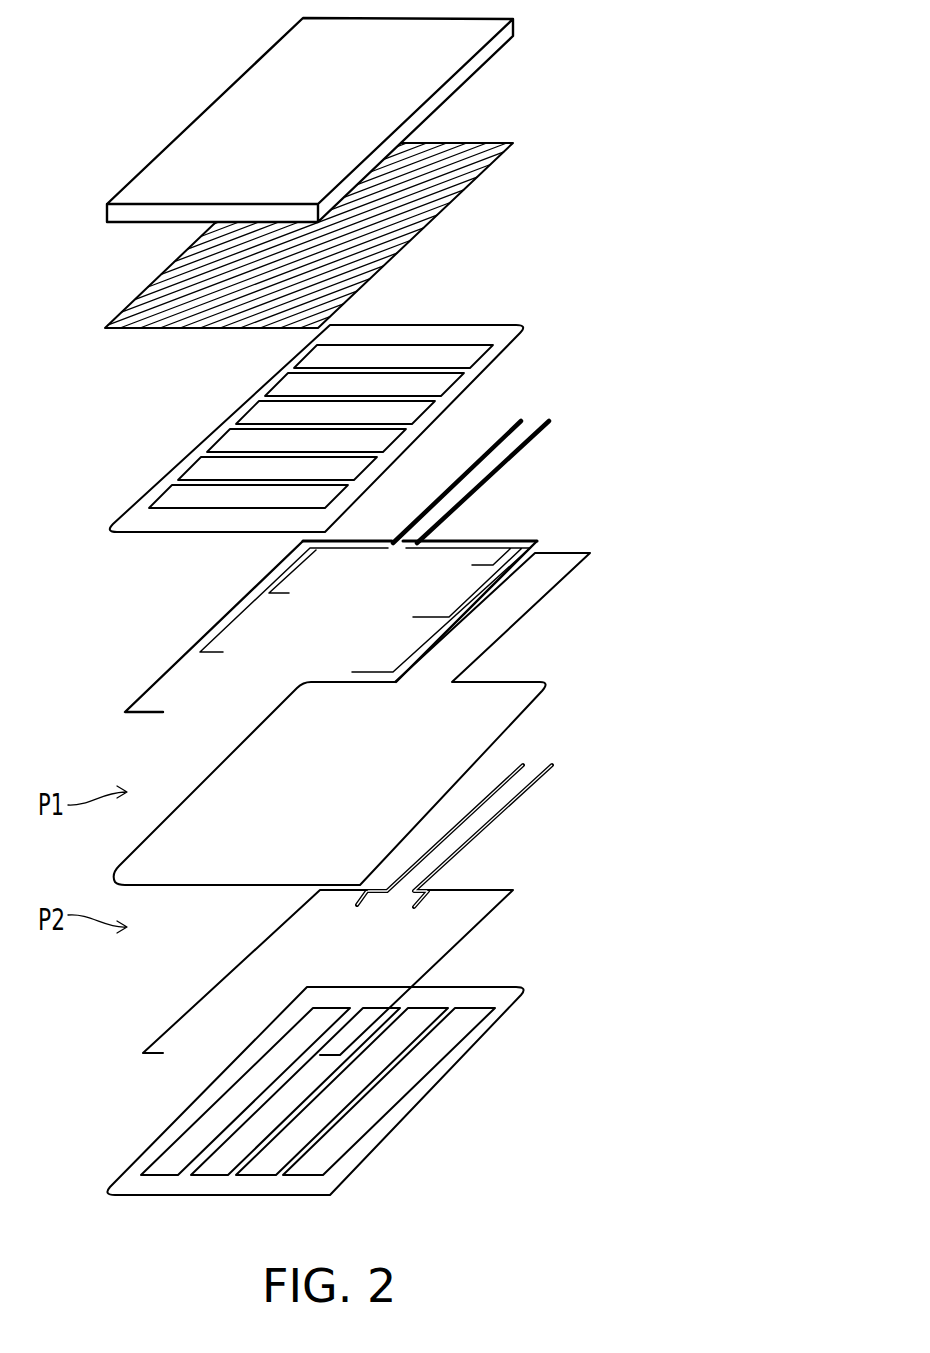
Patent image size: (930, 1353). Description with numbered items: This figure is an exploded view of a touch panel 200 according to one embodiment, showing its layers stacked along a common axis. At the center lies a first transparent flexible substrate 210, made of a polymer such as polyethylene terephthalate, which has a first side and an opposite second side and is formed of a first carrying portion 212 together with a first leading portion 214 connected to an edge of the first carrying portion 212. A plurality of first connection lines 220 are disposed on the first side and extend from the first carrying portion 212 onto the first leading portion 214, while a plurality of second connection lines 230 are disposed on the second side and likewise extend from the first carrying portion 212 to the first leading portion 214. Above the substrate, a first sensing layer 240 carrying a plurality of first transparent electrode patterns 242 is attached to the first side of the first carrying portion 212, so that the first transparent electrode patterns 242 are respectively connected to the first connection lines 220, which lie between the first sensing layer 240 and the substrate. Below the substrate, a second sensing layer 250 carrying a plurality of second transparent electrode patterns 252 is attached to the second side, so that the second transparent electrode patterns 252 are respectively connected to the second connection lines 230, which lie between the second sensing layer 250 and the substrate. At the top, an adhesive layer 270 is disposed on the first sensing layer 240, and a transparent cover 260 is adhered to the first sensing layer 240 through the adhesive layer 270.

The touch panel 200 is at (568, 1212).
The first transparent flexible substrate 210 is at (416, 713).
The first carrying portion 212 is at (667, 627).
The first leading portion 214 is at (473, 635).
The first connection lines 220 is at (502, 473).
The second connection lines 230 is at (502, 815).
The first sensing layer 240 is at (351, 404).
The first transparent electrode patterns 242 is at (457, 357).
The second sensing layer 250 is at (315, 1091).
The second transparent electrode patterns 252 is at (327, 1147).
The transparent cover 260 is at (475, 67).
The adhesive layer 270 is at (393, 230).